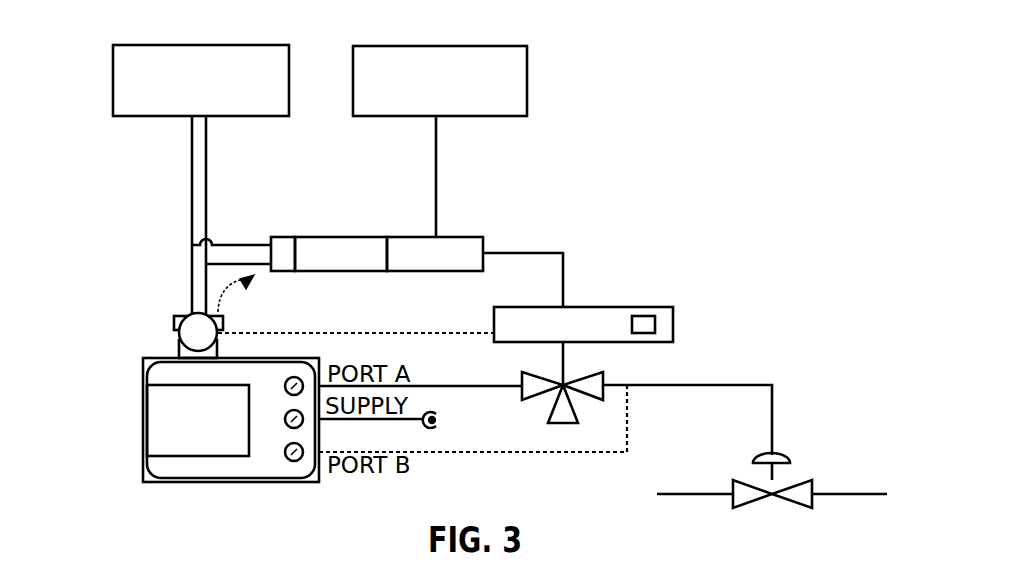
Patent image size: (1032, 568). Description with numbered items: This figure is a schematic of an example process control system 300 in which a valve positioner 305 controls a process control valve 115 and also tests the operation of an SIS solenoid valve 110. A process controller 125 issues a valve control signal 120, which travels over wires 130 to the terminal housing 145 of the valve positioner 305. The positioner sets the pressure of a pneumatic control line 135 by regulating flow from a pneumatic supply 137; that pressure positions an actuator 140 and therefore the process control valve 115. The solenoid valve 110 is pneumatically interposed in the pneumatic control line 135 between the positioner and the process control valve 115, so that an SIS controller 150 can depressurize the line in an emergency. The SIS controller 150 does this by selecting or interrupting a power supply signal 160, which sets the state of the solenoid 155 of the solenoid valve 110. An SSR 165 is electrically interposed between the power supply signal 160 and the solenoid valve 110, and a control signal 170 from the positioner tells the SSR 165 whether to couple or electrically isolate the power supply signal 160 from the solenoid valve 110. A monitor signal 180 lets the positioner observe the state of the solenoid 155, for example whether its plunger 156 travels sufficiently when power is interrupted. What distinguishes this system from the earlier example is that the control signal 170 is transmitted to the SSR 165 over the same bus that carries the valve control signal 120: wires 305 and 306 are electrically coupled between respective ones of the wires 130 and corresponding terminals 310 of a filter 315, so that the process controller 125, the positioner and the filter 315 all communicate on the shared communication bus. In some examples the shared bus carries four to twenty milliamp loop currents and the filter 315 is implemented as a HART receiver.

The SIS solenoid valve 110 is at (603, 272).
The process control valve 115 is at (810, 508).
The valve control signal 120 is at (107, 160).
The process controller 125 is at (113, 80).
The wires 130 is at (207, 127).
The pneumatic control line 135 is at (690, 385).
The pneumatic supply 137 is at (437, 415).
The actuator 140 is at (783, 453).
The terminal housing 145 is at (178, 316).
The SIS controller 150 is at (528, 80).
The solenoid 155 is at (630, 306).
The plunger 156 is at (643, 325).
The power supply signal 160 is at (436, 200).
The SSR 165 is at (402, 272).
The control signal 170 is at (228, 302).
The monitor signal 180 is at (392, 333).
The process control system 300 is at (760, 122).
The valve positioner 305 is at (220, 245).
The wire 306 is at (252, 265).
The terminals 310 is at (277, 237).
The filter 315 is at (323, 237).